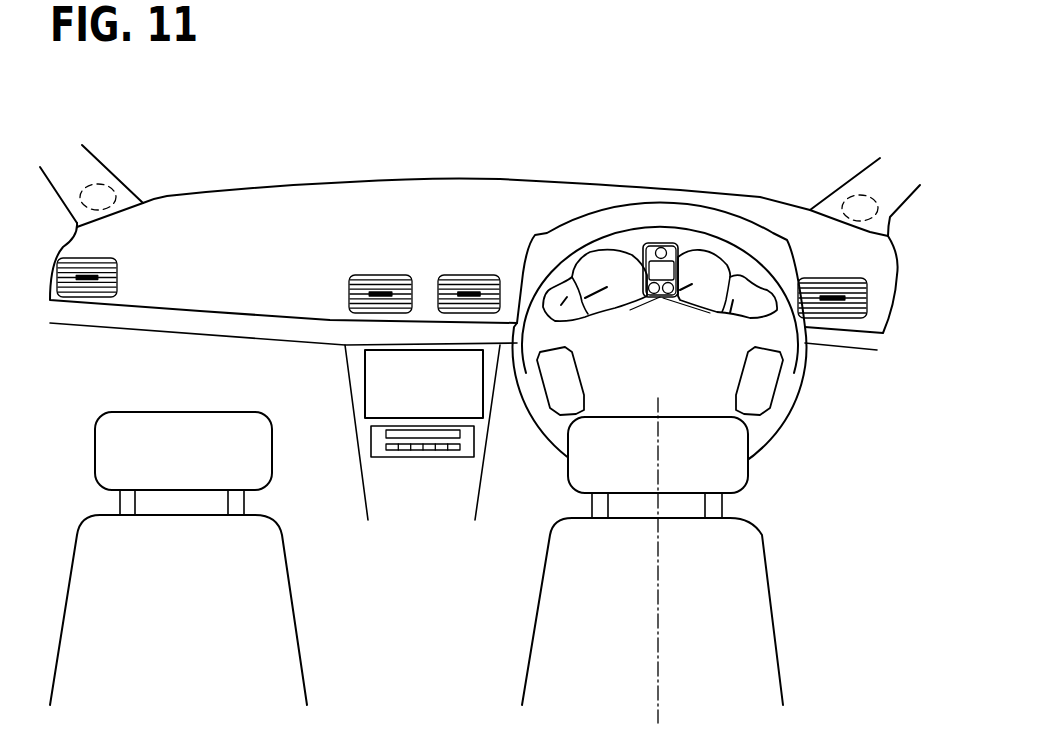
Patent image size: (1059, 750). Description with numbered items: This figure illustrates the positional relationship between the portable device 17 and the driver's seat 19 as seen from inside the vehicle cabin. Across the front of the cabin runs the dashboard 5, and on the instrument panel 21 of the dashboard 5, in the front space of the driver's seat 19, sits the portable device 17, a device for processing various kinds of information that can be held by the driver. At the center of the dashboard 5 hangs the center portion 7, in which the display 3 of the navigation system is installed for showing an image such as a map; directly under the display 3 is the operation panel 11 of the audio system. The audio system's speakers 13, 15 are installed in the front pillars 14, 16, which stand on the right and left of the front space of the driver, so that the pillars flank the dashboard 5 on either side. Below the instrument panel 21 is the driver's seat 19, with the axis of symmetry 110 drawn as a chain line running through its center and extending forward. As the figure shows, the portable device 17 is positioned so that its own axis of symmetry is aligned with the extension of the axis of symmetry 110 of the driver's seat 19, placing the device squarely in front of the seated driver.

The display 3 is at (383, 398).
The dashboard 5 is at (340, 197).
The center portion 7 is at (382, 482).
The operation panel 11 is at (470, 438).
The speaker 13 is at (128, 177).
The front pillar 14 is at (96, 160).
The speaker 15 is at (842, 200).
The front pillar 16 is at (868, 180).
The portable device 17 is at (680, 247).
The driver's seat 19 is at (740, 615).
The instrument panel 21 is at (710, 272).
The axis of symmetry 110 is at (657, 683).